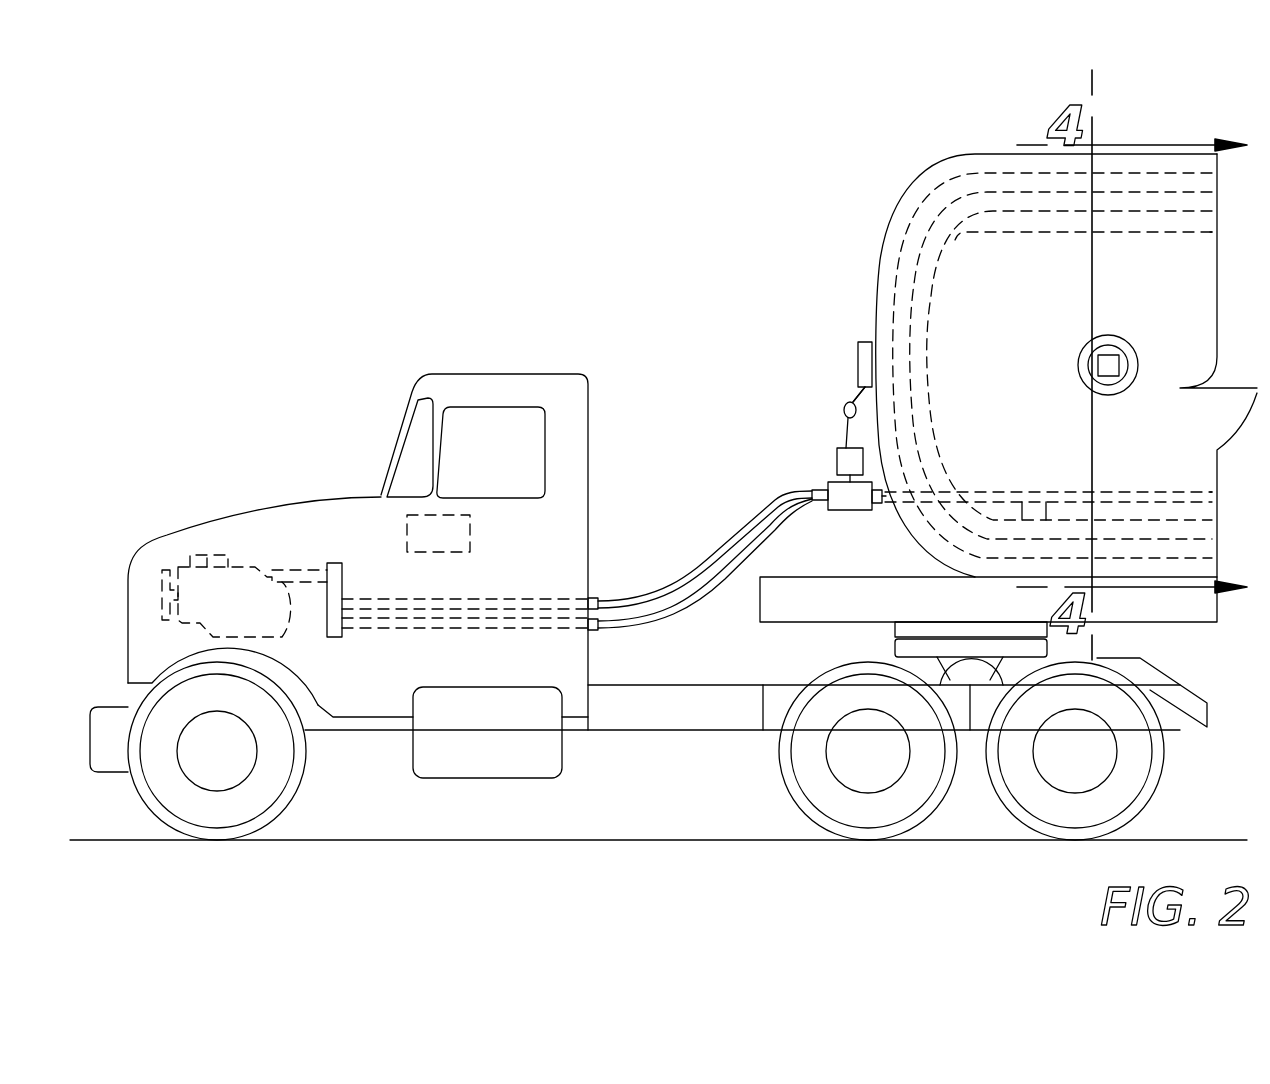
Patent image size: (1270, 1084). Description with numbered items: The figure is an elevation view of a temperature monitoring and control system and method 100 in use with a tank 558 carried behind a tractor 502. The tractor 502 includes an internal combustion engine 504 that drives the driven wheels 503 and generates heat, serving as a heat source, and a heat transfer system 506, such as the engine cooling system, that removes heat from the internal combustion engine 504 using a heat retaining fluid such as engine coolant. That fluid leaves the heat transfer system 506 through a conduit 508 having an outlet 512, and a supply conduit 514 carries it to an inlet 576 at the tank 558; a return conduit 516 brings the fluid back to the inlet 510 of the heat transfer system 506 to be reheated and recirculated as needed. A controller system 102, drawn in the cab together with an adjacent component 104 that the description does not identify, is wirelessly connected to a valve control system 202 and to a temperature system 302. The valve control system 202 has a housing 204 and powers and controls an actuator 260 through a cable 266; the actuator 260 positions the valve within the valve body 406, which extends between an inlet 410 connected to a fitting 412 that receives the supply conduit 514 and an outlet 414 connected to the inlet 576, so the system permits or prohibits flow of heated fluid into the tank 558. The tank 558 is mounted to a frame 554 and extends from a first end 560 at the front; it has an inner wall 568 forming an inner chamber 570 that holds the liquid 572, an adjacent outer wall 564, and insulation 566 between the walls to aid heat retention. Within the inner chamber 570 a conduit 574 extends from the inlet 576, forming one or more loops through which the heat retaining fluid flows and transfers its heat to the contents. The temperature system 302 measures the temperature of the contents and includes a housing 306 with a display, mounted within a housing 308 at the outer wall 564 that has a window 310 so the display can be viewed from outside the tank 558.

The temperature monitoring and control system and method 100 is at (388, 288).
The controller system 102 is at (386, 538).
The control unit 104 is at (472, 530).
The valve control system 202 is at (747, 330).
The housing 204 is at (858, 345).
The actuator 260 is at (842, 450).
The cable 266 is at (848, 404).
The temperature system 302 is at (1066, 335).
The housing 306 is at (1140, 374).
The housing 308 is at (1118, 390).
The window 310 is at (1122, 342).
The valve body 406 is at (838, 488).
The inlet 410 is at (840, 512).
The fitting 412 is at (828, 484).
The outlet 414 is at (878, 512).
The tractor 502 is at (297, 415).
The driven wheels 503 is at (800, 790).
The internal combustion engine 504 is at (250, 563).
The heat transfer system 506 is at (369, 650).
The conduit 508 is at (458, 598).
The inlet 510 is at (628, 583).
The outlet 512 is at (607, 630).
The supply conduit 514 is at (668, 612).
The return conduit 516 is at (660, 590).
The frame 554 is at (1167, 615).
The tank 558 is at (852, 178).
The first end 560 is at (943, 158).
The outer wall 564 is at (903, 234).
The insulation 566 is at (923, 338).
The inner wall 568 is at (957, 246).
The inner chamber 570 is at (890, 282).
The liquid 572 is at (1125, 236).
The conduit 574 is at (1083, 493).
The inlet 576 is at (884, 497).